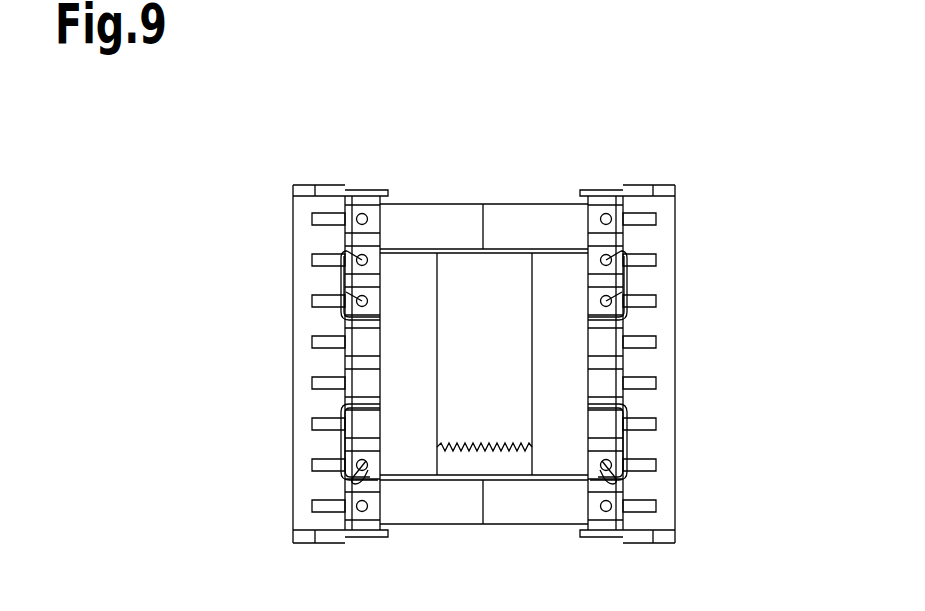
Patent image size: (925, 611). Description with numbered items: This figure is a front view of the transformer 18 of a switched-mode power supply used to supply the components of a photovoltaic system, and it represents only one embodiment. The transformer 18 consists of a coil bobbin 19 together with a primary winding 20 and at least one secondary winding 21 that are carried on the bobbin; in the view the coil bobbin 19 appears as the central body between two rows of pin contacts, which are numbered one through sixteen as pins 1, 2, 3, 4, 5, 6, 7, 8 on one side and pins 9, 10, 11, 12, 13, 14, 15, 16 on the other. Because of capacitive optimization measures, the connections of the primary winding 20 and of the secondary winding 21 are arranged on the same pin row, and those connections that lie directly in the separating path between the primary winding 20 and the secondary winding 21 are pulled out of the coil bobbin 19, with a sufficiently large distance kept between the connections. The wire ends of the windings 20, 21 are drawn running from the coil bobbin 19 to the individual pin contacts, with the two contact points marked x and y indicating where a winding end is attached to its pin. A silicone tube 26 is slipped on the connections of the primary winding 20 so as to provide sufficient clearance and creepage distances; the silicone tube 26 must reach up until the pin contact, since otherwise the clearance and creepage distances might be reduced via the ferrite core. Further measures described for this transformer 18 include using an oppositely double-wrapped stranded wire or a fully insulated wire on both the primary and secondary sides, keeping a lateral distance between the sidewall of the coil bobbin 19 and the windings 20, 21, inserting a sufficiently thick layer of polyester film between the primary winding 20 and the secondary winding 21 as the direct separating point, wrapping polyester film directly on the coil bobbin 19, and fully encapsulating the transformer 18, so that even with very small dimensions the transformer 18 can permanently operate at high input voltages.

The terminal 1 is at (346, 513).
The terminal 2 is at (346, 472).
The terminal 3 is at (346, 431).
The terminal 4 is at (346, 390).
The terminal 5 is at (346, 349).
The terminal 6 is at (346, 308).
The terminal 7 is at (346, 267).
The terminal 8 is at (346, 226).
The terminal 9 is at (622, 226).
The terminal 10 is at (625, 267).
The terminal 11 is at (625, 308).
The terminal 12 is at (625, 349).
The terminal 13 is at (625, 390).
The terminal 14 is at (625, 431).
The terminal 15 is at (625, 472).
The terminal 16 is at (625, 513).
The transformer 18 is at (728, 138).
The coil bobbin 19 is at (492, 330).
The primary winding 20 is at (342, 413).
The secondary winding 21 is at (346, 293).
The silicone tube 26 is at (338, 448).
The connection point x is at (372, 472).
The connection point y is at (597, 472).